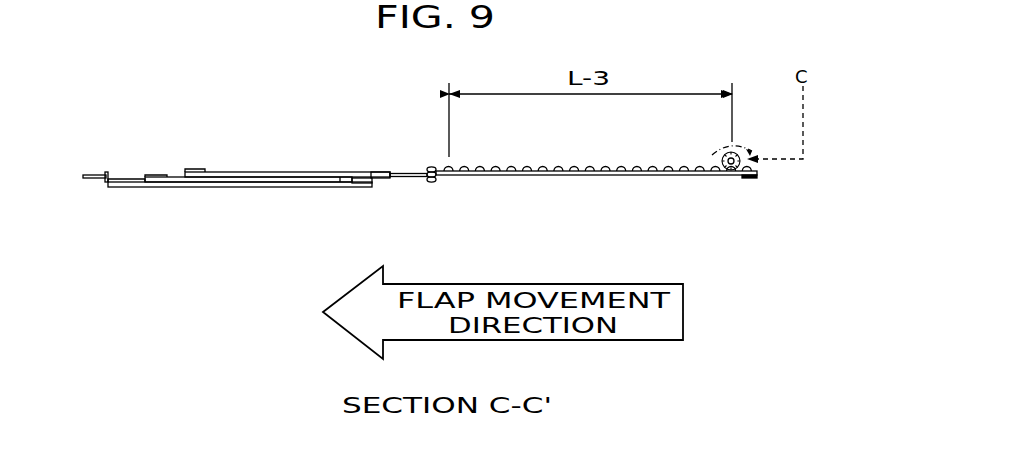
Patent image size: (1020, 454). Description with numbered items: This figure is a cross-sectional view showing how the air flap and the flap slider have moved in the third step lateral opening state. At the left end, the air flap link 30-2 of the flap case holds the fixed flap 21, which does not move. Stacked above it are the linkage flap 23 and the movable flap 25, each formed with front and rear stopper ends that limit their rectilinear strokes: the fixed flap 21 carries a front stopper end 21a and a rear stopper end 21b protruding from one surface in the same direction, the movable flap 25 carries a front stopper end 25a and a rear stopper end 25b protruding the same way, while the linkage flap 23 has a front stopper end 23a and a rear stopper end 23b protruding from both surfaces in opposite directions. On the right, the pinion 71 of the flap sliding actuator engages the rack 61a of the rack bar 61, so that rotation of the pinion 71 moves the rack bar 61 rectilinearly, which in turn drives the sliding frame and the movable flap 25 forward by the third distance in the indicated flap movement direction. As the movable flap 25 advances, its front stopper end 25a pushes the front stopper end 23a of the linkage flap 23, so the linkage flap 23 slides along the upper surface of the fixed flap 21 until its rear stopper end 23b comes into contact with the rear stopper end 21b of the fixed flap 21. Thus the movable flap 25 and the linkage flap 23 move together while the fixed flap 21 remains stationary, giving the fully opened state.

The second air flap link 30-2 is at (90, 175).
The fixed flap 21 is at (182, 188).
The front stopper end of the fixed flap 21a is at (366, 184).
The rear stopper end of the fixed flap 21b is at (125, 176).
The linkage flap 23 is at (252, 185).
The front stopper end of the linkage flap 23a is at (355, 186).
The rear stopper end of the linkage flap 23b is at (157, 176).
The movable flap 25 is at (283, 170).
The front stopper end of the movable flap 25a is at (382, 171).
The rear stopper end of the movable flap 25b is at (193, 170).
The rack bar 61 is at (623, 177).
The rack 61a is at (628, 167).
The pinion 71 is at (742, 150).